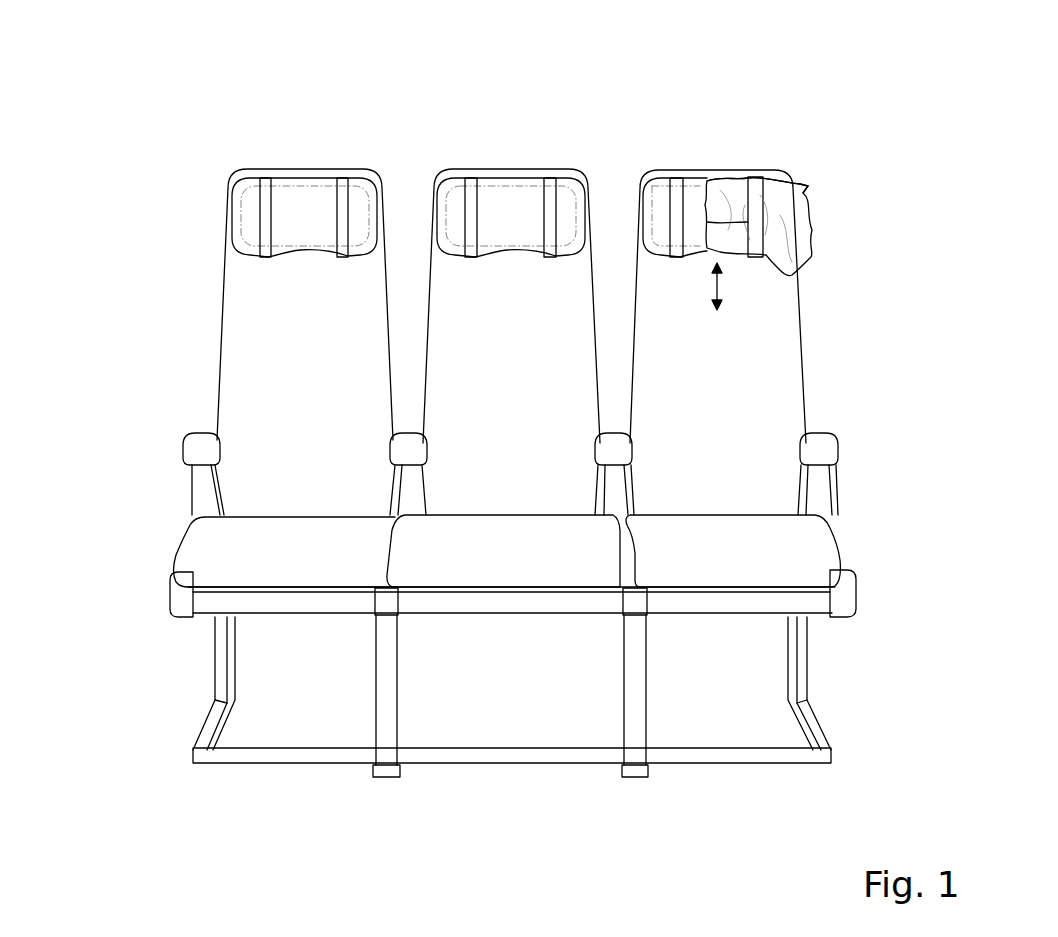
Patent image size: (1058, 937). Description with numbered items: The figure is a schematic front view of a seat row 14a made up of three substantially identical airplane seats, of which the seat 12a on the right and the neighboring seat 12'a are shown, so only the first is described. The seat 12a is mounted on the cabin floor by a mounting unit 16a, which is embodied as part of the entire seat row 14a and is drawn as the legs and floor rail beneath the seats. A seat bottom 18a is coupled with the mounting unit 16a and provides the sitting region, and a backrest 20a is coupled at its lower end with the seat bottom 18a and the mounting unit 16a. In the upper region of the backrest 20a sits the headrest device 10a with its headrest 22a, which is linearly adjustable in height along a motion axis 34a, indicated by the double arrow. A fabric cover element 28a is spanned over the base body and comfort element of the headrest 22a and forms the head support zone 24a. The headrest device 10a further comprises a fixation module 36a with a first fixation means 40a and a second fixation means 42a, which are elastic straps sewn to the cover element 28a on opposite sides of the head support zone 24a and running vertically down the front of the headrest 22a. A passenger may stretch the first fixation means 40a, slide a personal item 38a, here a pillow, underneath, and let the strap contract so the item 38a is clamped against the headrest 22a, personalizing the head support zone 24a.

The headrest device 10a is at (639, 171).
The seat 12a is at (707, 159).
The seat 12'a is at (511, 238).
The seat row 14a is at (183, 658).
The mounting unit 16a is at (635, 700).
The seat bottom 18a is at (777, 547).
The backrest 20a is at (753, 392).
The headrest 22a is at (697, 197).
The head support zone 24a is at (707, 222).
The cover element 28a is at (662, 237).
The motion axis 34a is at (720, 280).
The fixation module 36a is at (735, 163).
The personal item 38a is at (788, 211).
The first fixation means 40a is at (760, 170).
The second fixation means 42a is at (677, 198).